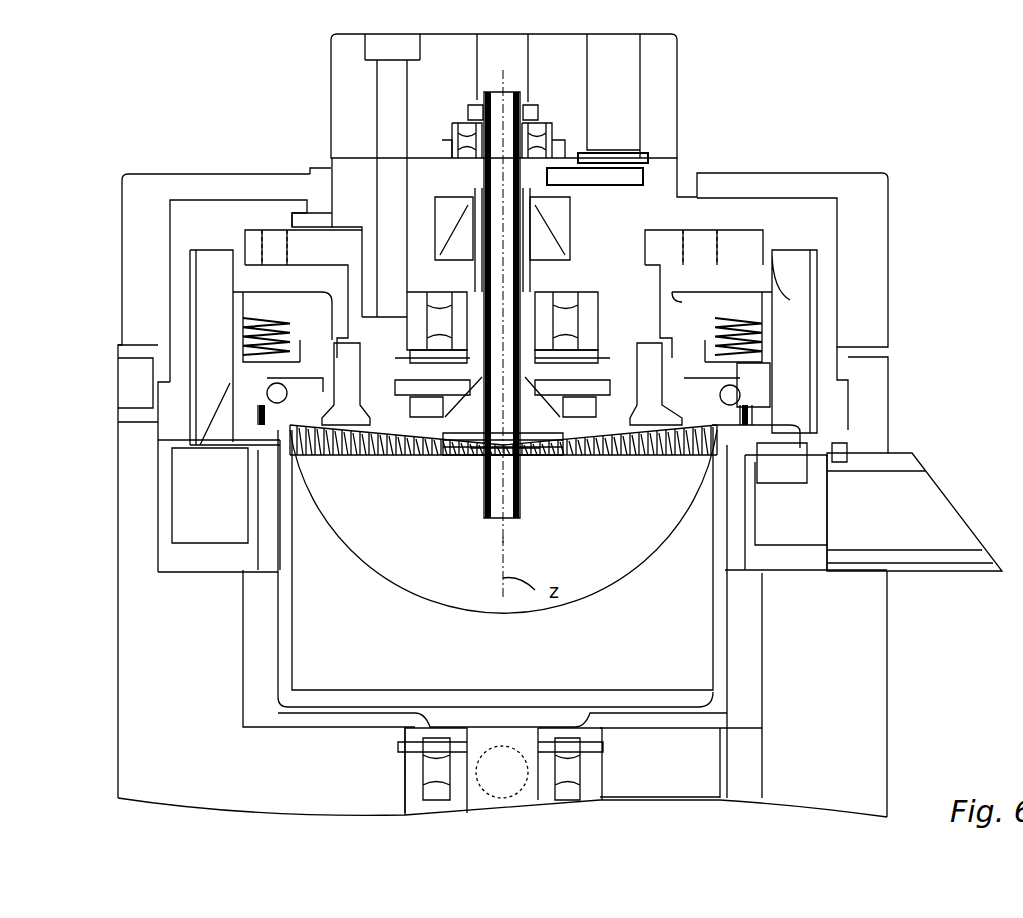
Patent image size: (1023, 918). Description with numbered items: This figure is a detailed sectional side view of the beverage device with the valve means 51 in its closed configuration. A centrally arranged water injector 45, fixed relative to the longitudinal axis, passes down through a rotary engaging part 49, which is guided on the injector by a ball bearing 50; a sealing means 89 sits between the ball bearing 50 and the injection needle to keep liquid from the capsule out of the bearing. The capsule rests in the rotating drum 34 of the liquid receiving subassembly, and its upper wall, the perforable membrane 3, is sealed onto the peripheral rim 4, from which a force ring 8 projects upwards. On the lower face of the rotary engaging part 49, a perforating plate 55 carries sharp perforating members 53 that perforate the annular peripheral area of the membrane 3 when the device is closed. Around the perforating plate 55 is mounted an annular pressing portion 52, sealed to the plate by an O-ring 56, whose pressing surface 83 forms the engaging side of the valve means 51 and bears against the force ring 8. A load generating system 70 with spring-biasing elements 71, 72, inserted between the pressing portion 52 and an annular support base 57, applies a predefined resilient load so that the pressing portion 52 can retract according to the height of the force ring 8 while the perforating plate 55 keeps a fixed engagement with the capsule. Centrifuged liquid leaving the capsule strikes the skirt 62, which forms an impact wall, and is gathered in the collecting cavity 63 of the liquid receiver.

The perforable membrane 3 is at (452, 448).
The peripheral rim 4 is at (503, 459).
The force ring 8 is at (760, 412).
The rotating drum 34 is at (722, 665).
The water injector 45 is at (540, 203).
The rotary engaging part 49 is at (249, 273).
The ball bearing 50 is at (585, 303).
The valve means 51 is at (181, 359).
The annular pressing portion 52 is at (760, 346).
The perforating members 53 is at (338, 455).
The perforating plate 55 is at (750, 440).
The O-ring 56 is at (750, 372).
The annular support base 57 is at (752, 300).
The skirt 62 is at (832, 490).
The collecting cavity 63 is at (792, 560).
The load generating system 70 is at (788, 296).
The spring-biasing element 71 is at (718, 330).
The spring-biasing element 72 is at (243, 330).
The pressing surface 83 is at (805, 445).
The sealing means 89 is at (533, 452).